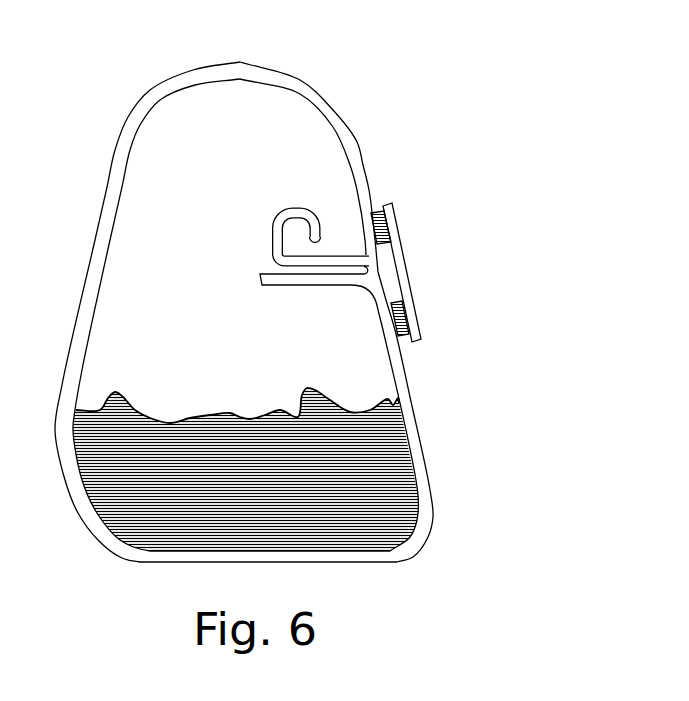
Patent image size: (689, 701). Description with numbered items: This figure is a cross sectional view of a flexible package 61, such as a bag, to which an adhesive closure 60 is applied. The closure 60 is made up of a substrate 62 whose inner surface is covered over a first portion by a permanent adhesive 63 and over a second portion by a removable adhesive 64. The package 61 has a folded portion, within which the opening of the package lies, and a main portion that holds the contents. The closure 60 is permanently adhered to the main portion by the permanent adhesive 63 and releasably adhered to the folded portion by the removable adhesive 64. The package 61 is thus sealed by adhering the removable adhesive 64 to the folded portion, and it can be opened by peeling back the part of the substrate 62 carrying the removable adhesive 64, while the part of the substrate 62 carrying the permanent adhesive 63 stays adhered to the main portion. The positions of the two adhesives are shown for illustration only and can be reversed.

The closure 60 is at (444, 280).
The flexible package 61 is at (303, 85).
The substrate 62 is at (393, 238).
The permanent adhesive 63 is at (403, 318).
The removable adhesive 64 is at (383, 210).